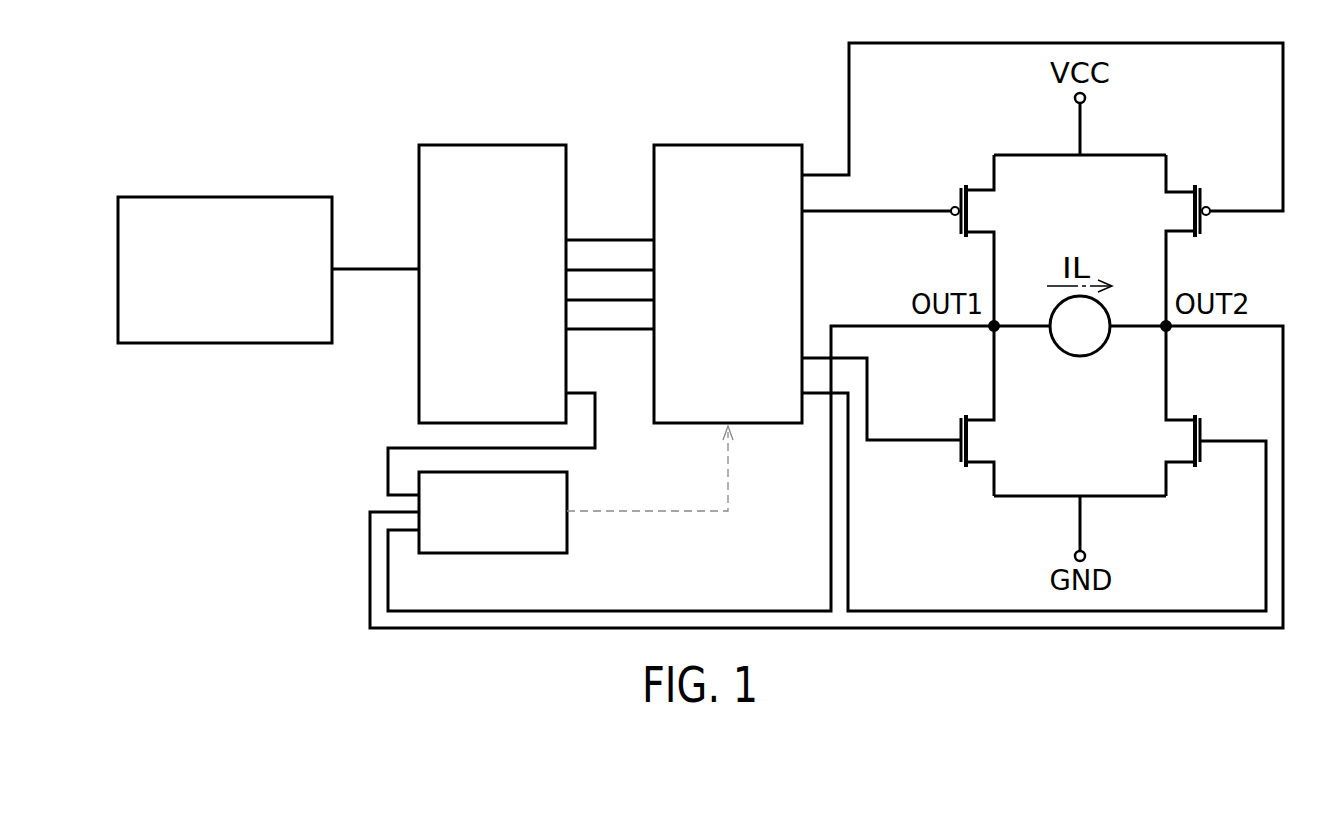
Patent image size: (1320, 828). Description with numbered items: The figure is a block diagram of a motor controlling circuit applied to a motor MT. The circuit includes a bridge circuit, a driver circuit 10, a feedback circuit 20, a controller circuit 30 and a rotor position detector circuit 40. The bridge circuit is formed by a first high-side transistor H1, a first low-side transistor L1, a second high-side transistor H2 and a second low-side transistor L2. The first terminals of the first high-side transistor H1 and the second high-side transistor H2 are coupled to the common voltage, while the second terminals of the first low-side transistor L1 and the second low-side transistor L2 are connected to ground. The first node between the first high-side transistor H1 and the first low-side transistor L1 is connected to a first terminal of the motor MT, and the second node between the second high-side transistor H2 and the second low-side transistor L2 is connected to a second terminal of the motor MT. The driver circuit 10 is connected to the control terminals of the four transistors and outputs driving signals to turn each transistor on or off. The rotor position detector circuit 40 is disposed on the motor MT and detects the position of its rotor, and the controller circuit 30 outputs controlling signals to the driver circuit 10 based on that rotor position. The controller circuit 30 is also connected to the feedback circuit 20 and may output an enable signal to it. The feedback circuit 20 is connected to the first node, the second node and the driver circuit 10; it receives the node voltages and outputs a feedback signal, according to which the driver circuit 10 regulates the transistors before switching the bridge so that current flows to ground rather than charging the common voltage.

The driver circuit 10 is at (729, 145).
The feedback circuit 20 is at (568, 488).
The controller circuit 30 is at (493, 145).
The rotor position detector circuit 40 is at (190, 197).
The first high-side transistor H1 is at (957, 195).
The second high-side transistor H2 is at (1204, 198).
The first low-side transistor L1 is at (958, 456).
The second low-side transistor L2 is at (1204, 455).
The motor MT is at (1084, 357).